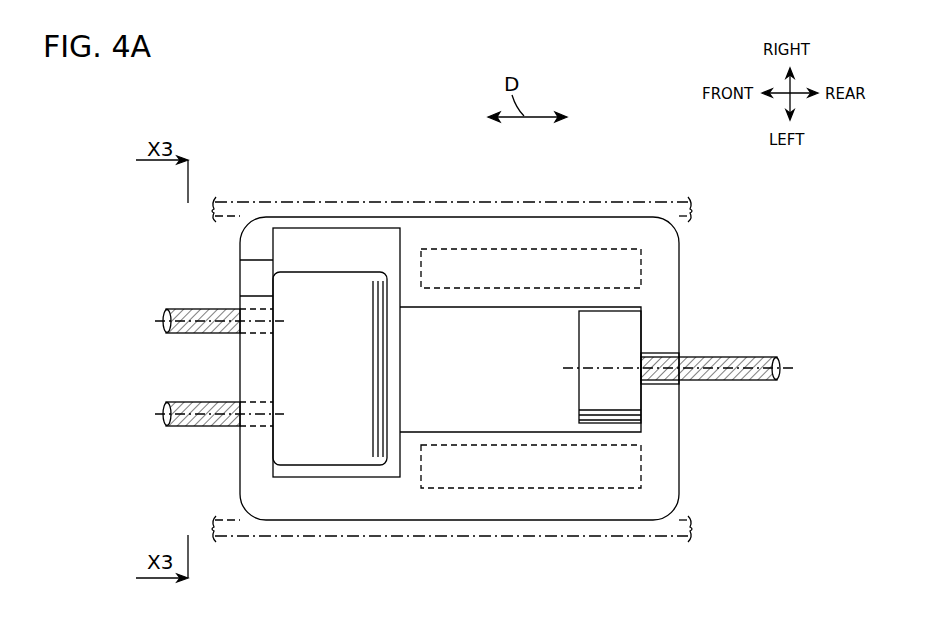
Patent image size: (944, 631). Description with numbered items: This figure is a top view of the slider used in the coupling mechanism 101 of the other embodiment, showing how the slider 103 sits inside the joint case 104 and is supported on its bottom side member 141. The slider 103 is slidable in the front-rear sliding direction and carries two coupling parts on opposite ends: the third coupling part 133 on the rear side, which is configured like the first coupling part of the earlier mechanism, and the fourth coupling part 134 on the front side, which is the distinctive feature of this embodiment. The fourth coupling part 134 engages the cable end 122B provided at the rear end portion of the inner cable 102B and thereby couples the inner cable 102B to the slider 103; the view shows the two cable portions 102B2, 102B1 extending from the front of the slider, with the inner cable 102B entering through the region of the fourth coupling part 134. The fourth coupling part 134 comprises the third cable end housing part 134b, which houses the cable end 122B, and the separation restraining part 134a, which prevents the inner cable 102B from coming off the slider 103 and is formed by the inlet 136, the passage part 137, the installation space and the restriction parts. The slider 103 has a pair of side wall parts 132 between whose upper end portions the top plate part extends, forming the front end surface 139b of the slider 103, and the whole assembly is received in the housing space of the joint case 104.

The coupling mechanism 101 is at (644, 104).
The slider 103 is at (610, 169).
The joint case 104 is at (471, 401).
The bottom side member 141 is at (640, 544).
The side wall part 132 is at (303, 216).
The fourth coupling part 134 is at (225, 338).
The separation restraining part 134a is at (238, 258).
The third cable end housing part 134b is at (272, 240).
The passage part 137 is at (249, 282).
The cable end 122B is at (334, 317).
The inlet 136 is at (268, 278).
The front end surface 139b is at (239, 465).
The inner cable 102B is at (155, 390).
The second cable 102B2 is at (203, 334).
The first cable 102B1 is at (197, 427).
The third coupling part 133 is at (690, 334).